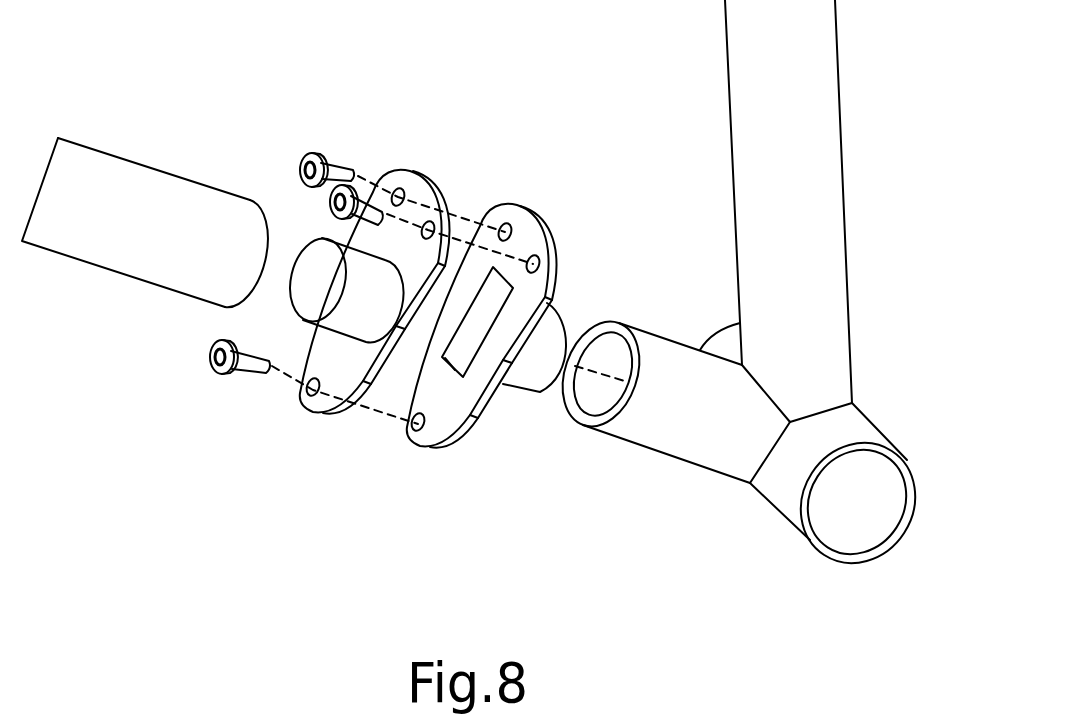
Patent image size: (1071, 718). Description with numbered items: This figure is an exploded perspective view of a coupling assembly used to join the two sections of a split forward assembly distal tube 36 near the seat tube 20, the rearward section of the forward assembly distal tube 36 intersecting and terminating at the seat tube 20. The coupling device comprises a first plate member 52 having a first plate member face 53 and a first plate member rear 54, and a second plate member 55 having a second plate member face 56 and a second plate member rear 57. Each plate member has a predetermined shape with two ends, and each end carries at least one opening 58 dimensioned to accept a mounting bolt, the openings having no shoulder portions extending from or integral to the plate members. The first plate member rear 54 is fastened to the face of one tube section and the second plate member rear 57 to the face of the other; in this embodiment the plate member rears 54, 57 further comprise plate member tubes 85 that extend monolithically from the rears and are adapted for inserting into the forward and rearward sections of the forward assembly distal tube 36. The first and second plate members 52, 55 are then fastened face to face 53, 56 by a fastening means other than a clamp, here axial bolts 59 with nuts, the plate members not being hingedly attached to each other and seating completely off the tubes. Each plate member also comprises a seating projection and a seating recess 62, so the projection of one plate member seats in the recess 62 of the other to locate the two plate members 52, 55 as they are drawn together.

The seat tube 20 is at (755, 115).
The forward assembly distal tube 36 is at (160, 258).
The first plate member 52 is at (323, 413).
The first plate member face 53 is at (445, 190).
The first plate member rear 54 is at (422, 198).
The second plate member 55 is at (565, 253).
The second plate member face 56 is at (443, 395).
The second plate member rear 57 is at (483, 402).
The opening 58 is at (413, 440).
The axial bolts 59 is at (235, 377).
The seating recess 62 is at (493, 303).
The plate member tubes 85 is at (337, 322).